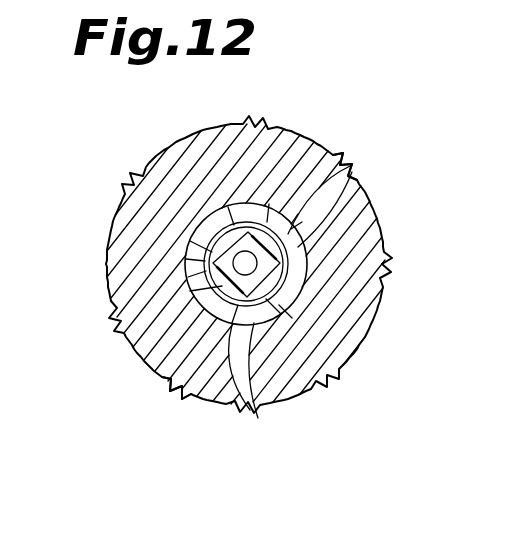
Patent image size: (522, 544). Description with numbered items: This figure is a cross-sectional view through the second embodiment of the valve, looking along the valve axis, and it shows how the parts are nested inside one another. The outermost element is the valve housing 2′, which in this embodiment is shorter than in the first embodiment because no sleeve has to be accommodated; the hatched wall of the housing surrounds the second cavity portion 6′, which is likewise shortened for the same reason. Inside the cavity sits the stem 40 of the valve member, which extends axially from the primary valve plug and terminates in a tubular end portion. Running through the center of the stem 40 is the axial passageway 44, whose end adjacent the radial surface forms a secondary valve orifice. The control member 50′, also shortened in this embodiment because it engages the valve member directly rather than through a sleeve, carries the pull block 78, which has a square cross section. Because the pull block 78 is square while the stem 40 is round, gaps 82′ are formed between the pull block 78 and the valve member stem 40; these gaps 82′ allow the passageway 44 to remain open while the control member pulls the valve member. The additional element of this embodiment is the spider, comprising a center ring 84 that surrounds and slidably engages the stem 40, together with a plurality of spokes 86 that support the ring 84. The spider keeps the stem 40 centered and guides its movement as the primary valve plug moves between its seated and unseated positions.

The valve housing 2′ is at (317, 143).
The second cavity portion 6′ is at (348, 168).
The pull block 78 is at (300, 244).
The spokes 86 is at (256, 412).
The center ring 84 is at (205, 393).
The stem 40 is at (273, 285).
The control member 50′ is at (240, 258).
The axial passageway 44 is at (190, 241).
The gaps 82′ is at (190, 291).